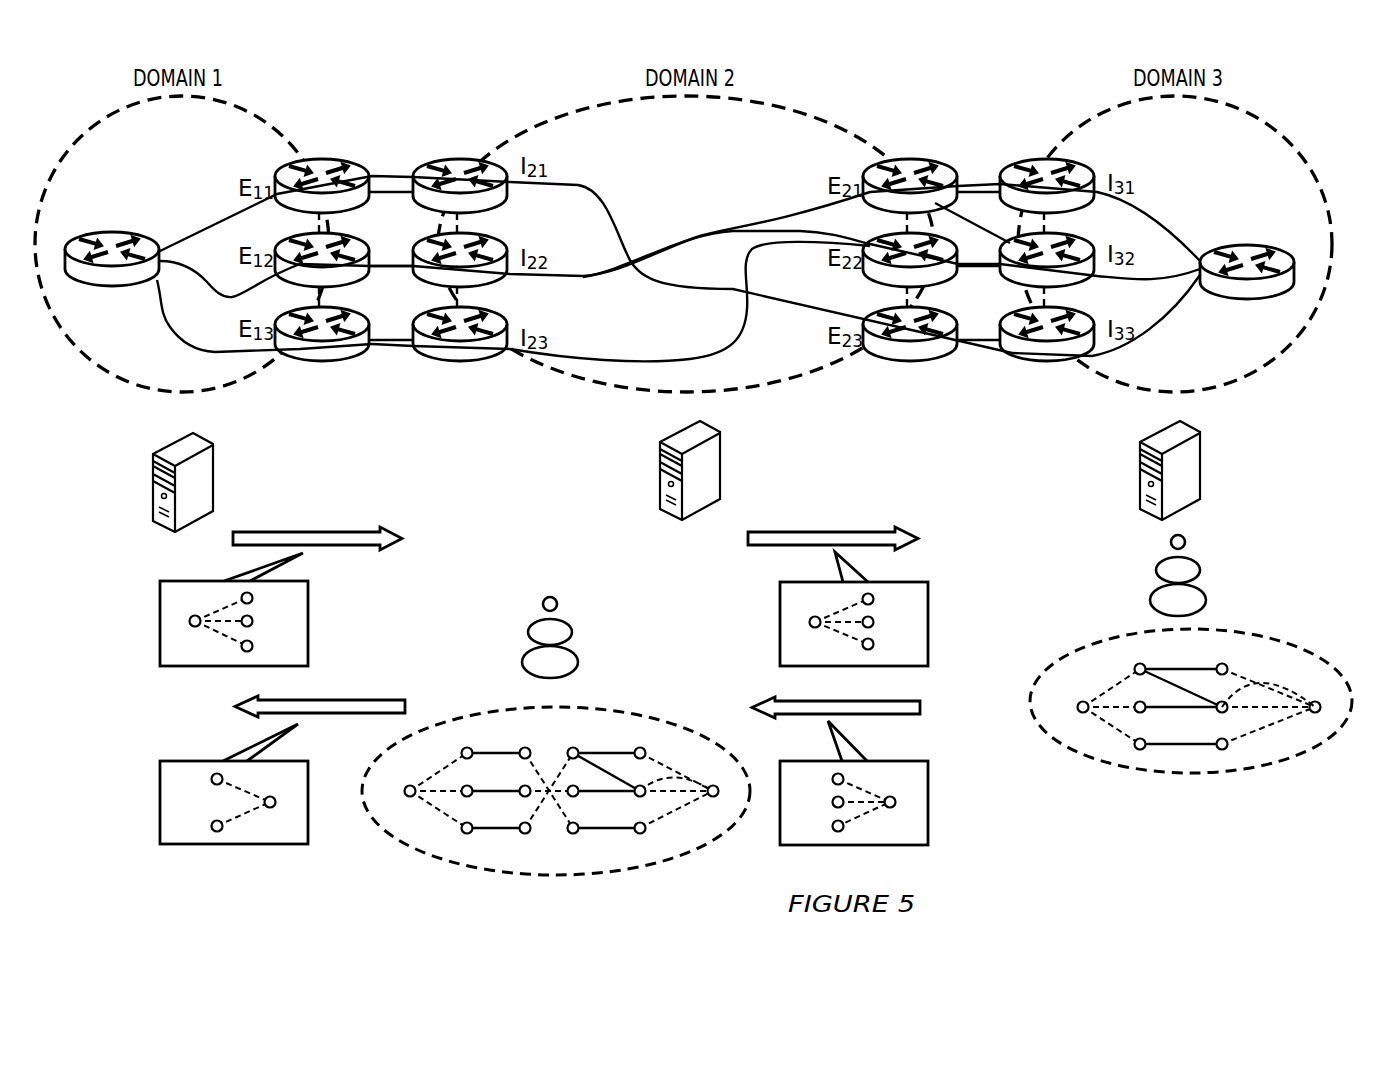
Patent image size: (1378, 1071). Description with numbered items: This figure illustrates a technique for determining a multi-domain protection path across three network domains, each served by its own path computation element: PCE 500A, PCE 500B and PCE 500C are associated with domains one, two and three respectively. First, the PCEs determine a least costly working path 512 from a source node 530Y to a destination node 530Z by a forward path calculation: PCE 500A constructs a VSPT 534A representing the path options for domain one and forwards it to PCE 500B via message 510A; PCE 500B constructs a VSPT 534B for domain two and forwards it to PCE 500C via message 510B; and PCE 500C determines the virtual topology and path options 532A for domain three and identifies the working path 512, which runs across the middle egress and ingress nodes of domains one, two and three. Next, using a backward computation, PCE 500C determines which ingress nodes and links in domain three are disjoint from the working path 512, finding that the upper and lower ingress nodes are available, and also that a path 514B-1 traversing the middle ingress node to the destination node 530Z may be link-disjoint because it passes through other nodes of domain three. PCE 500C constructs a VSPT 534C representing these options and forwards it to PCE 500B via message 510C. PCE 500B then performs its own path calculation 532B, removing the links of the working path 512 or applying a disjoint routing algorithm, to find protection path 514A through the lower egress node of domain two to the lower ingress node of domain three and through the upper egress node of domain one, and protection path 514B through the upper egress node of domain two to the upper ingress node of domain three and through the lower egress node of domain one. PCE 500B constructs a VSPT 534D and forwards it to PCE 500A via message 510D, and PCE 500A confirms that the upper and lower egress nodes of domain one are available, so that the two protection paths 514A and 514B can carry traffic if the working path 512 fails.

The source node 530Y is at (112, 233).
The destination node 530Z is at (1230, 247).
The protection path 514A is at (1327, 768).
The protection path 514B is at (392, 343).
The path 514B-1 is at (1250, 692).
The working path 512 is at (210, 285).
The PCE 500A is at (214, 469).
The PCE 500B is at (720, 460).
The PCE 500C is at (1200, 462).
The message 510A is at (400, 532).
The message 510B is at (927, 517).
The message 510C is at (773, 700).
The message 510D is at (383, 701).
The VSPT 534A is at (160, 622).
The VSPT 534B is at (928, 620).
The VSPT 534C is at (928, 813).
The VSPT 534D is at (160, 803).
The path options/calculations 532A is at (1248, 768).
The path calculation 532B is at (398, 842).